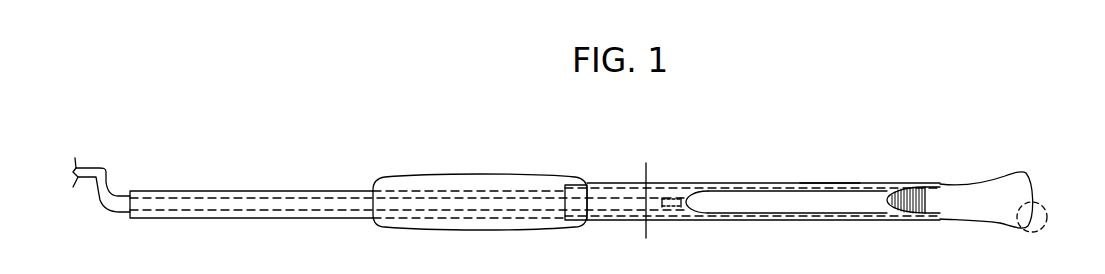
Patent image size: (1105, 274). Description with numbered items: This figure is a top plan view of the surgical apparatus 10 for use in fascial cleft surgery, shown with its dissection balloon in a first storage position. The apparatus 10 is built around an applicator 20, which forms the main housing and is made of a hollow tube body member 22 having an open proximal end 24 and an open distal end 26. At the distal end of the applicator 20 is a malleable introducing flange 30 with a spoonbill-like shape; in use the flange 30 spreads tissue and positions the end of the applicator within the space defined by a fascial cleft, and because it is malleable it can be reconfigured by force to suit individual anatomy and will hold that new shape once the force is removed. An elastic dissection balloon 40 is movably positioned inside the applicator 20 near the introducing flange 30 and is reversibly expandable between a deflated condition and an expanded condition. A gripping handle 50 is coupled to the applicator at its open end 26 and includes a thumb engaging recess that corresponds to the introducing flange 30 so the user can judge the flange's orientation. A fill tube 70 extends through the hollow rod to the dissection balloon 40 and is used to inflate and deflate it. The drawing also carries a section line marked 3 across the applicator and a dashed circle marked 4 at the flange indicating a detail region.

The surgical apparatus 10 is at (755, 108).
The applicator 20 is at (764, 183).
The hollow tube body member 22 is at (817, 183).
The open proximal end 24 is at (918, 184).
The open distal end 26 is at (372, 192).
The malleable introducing flange 30 is at (1005, 187).
The elastic dissection balloon 40 is at (860, 198).
The gripping handle 50 is at (477, 177).
The fill tube 70 is at (96, 168).
The section line 3- 3 is at (687, 233).
The detail region 4 is at (1043, 227).